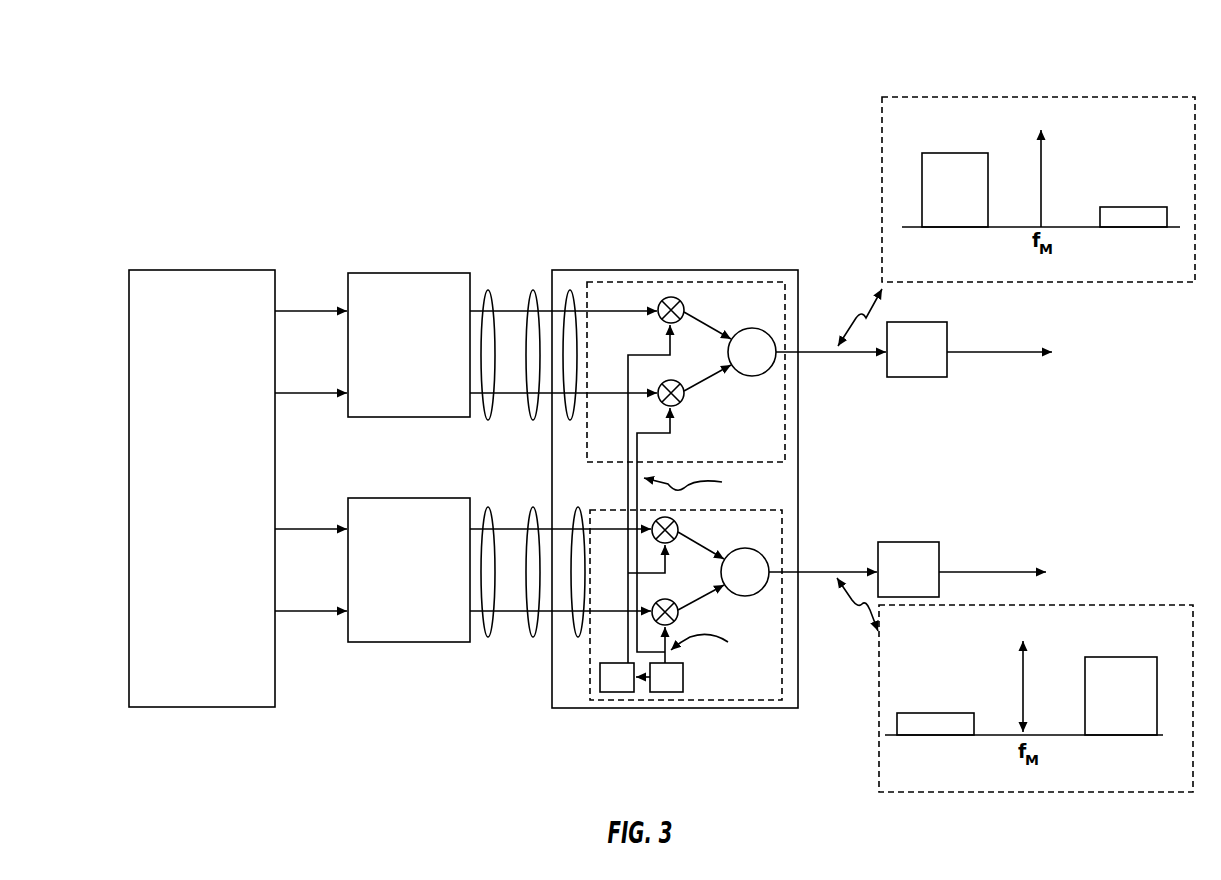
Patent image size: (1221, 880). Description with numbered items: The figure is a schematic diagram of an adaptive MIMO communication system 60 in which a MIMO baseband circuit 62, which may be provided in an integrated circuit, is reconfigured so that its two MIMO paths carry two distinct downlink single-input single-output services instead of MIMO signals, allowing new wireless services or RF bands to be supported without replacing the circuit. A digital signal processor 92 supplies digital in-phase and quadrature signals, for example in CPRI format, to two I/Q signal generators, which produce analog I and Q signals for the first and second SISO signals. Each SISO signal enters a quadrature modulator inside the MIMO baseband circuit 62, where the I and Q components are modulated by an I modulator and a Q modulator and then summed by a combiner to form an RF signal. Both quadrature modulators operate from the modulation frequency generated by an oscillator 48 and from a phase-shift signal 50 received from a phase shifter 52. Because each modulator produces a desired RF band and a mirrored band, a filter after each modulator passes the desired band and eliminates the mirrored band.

The adaptive MIMO communication system 60 is at (741, 113).
The MIMO baseband circuit 62 is at (625, 270).
The digital signal processor (DSP) 92 is at (181, 270).
The phase-shift signal 50 is at (675, 337).
The phase shifter 52 is at (616, 693).
The oscillator 48 is at (666, 693).